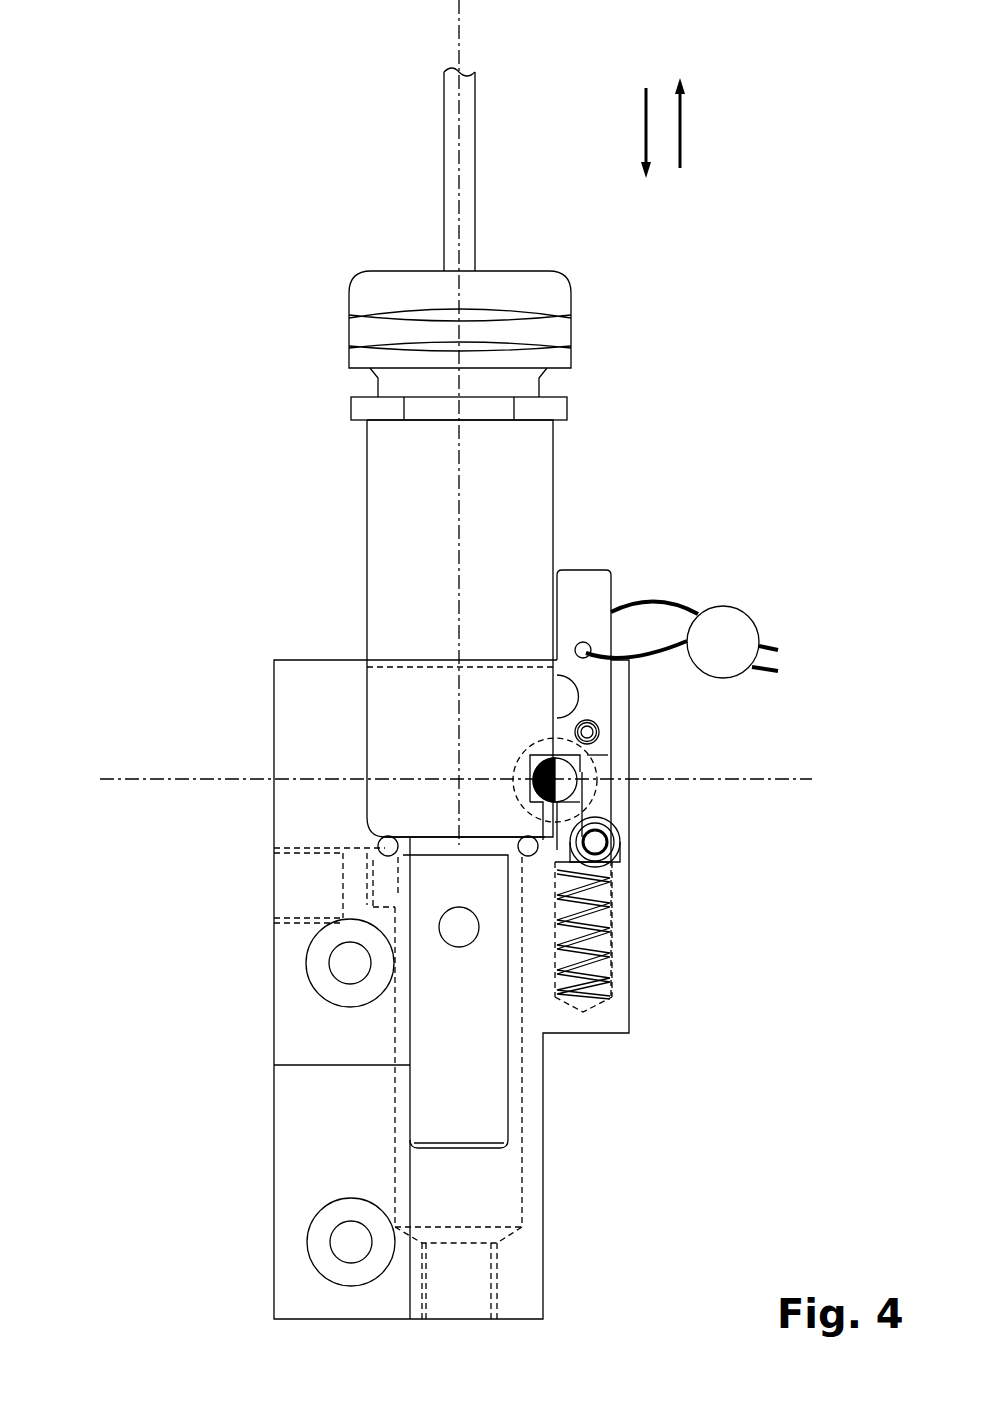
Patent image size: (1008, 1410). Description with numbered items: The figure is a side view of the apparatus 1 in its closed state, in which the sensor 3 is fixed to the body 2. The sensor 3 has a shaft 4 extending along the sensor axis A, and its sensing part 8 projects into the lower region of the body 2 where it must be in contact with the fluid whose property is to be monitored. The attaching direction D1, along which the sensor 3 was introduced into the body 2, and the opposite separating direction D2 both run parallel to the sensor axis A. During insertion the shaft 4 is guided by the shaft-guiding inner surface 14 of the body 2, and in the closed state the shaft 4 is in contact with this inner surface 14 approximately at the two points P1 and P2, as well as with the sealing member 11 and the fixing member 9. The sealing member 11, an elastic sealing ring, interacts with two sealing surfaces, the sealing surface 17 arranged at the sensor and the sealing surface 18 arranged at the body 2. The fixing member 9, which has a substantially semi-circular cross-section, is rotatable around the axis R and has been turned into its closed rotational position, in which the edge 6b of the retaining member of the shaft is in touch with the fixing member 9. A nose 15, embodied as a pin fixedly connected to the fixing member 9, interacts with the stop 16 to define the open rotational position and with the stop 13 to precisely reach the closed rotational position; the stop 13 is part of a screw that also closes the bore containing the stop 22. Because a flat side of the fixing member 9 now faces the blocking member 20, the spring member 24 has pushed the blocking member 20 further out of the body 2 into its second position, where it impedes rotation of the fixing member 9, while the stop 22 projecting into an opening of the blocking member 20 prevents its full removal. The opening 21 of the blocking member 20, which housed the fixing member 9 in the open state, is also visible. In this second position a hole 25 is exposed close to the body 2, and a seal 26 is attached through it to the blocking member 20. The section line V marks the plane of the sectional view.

The apparatus 1 is at (108, 96).
The body 2 is at (742, 1111).
The sensor 3 is at (746, 389).
The shaft 4 is at (367, 518).
The sensing part 8 is at (410, 1068).
The fixing member 9 is at (548, 788).
The sealing member 11 is at (378, 845).
The stop 13 is at (618, 838).
The inner surface 14 is at (365, 735).
The nose 15 is at (598, 860).
The stop 16 is at (599, 729).
The sealing surface 17 is at (376, 806).
The sealing surface 18 is at (378, 856).
The blocking member 20 is at (588, 580).
The opening 21 is at (562, 705).
The stop 22 is at (600, 846).
The spring member 24 is at (590, 940).
The hole 25 is at (589, 645).
The seal 26 is at (738, 612).
The edge 6b is at (558, 805).
The sensor axis A is at (459, 180).
The axis R is at (557, 779).
The section line V is at (458, 779).
The point P1 is at (545, 652).
The point P2 is at (352, 826).
The attaching direction D1 is at (622, 133).
The separating direction D2 is at (702, 123).